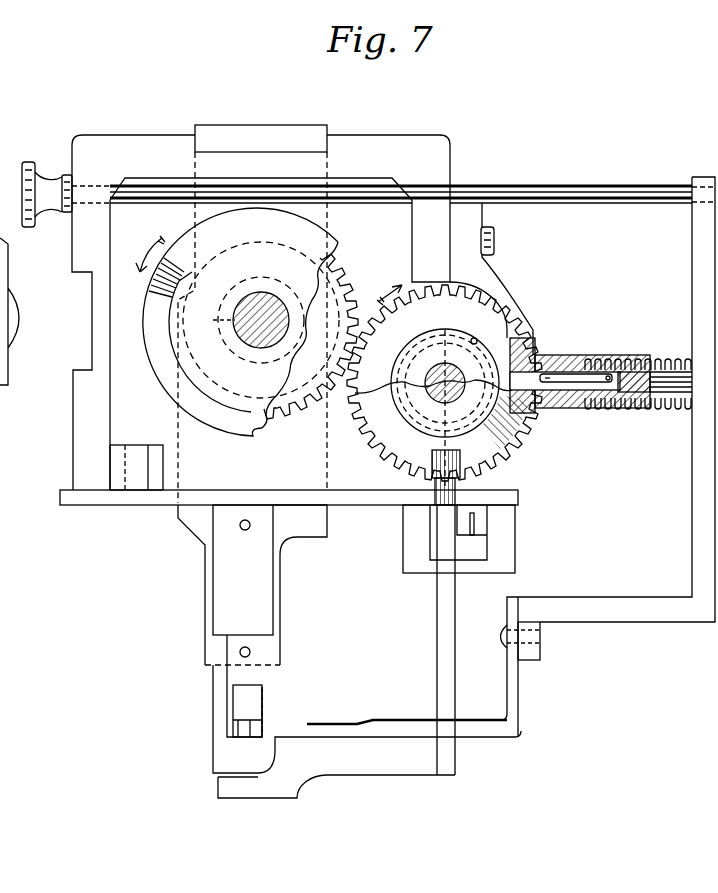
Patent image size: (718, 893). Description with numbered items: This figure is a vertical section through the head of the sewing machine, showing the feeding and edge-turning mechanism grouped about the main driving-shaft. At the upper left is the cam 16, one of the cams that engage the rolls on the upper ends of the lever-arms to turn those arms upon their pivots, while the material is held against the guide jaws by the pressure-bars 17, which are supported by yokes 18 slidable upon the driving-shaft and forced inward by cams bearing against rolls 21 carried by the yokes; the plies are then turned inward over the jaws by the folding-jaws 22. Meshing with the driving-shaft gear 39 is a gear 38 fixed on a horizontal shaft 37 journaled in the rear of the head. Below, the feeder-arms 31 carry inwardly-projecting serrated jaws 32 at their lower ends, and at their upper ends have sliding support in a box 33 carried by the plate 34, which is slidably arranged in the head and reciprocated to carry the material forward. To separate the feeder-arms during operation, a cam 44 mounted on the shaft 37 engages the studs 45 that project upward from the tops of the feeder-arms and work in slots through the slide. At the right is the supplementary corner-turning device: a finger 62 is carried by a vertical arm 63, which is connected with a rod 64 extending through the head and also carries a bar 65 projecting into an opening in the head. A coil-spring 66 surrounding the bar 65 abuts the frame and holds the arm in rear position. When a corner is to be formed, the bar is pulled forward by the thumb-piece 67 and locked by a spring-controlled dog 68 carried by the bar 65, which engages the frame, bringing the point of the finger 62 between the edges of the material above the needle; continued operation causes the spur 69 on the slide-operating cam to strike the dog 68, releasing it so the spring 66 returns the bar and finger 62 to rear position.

The cam 16 is at (154, 332).
The pressure-bar 17 is at (272, 714).
The yoke 18 is at (318, 133).
The roll 21 is at (12, 318).
The folding-jaw 22 is at (234, 731).
The feeder-arm 31 is at (437, 651).
The serrated jaw 32 is at (230, 790).
The box 33 is at (404, 568).
The plate 34 is at (383, 498).
The horizontal shaft 37 is at (438, 402).
The gear 38 is at (445, 383).
The gear 39 is at (311, 336).
The cam 44 is at (522, 441).
The stud 45 is at (466, 485).
The finger 62 is at (339, 729).
The vertical arm 63 is at (692, 525).
The rod 64 is at (565, 193).
The bar 65 is at (657, 371).
The spring 66 is at (669, 409).
The thumb-piece 67 is at (36, 162).
The spring-controlled dog 68 is at (544, 379).
The spur 69 is at (474, 338).